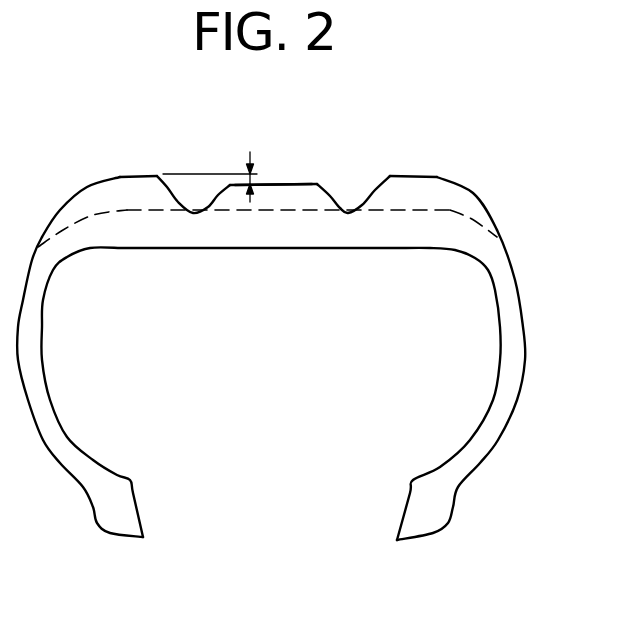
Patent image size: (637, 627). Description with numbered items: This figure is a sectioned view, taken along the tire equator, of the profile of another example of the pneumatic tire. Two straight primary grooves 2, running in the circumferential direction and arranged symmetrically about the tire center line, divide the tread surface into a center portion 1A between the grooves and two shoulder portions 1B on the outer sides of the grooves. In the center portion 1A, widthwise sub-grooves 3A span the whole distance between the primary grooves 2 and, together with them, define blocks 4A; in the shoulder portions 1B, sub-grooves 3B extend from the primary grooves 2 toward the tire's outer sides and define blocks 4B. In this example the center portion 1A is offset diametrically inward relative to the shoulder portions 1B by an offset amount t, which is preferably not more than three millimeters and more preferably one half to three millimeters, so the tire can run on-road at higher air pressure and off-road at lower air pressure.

The center portion 1A is at (298, 185).
The shoulder portions 1B is at (110, 177).
The primary grooves 2 is at (201, 203).
The sub-grooves 3A is at (280, 202).
The sub-grooves 3B is at (145, 200).
The blocks 4A is at (267, 193).
The blocks 4B is at (120, 177).
The offset amount t is at (210, 168).